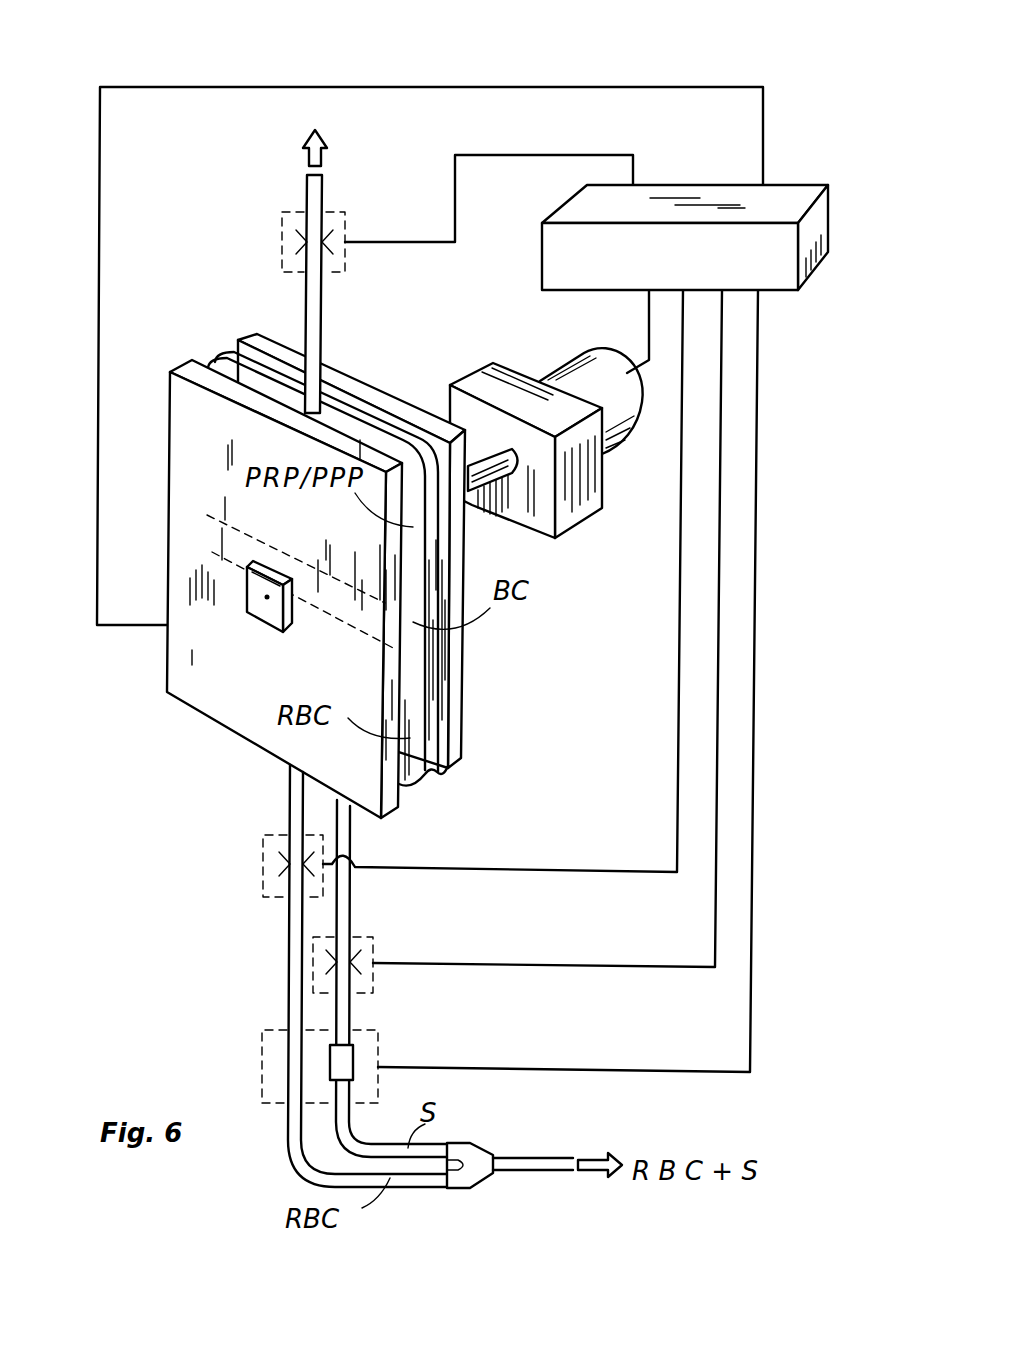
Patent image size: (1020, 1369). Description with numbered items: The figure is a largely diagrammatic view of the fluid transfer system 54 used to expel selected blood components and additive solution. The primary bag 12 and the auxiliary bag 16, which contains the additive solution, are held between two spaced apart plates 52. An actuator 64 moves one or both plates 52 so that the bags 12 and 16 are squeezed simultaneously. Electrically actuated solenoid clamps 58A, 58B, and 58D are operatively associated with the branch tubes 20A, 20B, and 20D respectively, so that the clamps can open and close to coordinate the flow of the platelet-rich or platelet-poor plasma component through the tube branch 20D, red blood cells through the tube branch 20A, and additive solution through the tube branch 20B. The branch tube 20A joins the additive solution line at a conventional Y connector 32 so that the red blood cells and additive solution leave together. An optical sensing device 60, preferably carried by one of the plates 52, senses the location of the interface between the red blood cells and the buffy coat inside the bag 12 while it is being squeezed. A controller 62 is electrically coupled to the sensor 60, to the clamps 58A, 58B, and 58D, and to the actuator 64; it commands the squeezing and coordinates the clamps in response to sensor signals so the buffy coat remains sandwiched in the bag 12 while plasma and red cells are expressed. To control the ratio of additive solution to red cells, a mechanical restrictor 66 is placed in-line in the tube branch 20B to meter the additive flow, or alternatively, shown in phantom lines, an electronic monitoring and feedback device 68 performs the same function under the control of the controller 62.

The primary bag 12 is at (410, 787).
The auxiliary bag 16 is at (438, 668).
The branch tube 20A is at (292, 793).
The branch tube 20B is at (348, 917).
The branch tube 20D is at (318, 308).
The Y connector 32 is at (482, 1168).
The plates 52 is at (326, 579).
The fluid transfer system 54 is at (146, 78).
The solenoid clamp 58A is at (277, 890).
The solenoid clamp 58B is at (382, 995).
The solenoid clamp 58D is at (378, 190).
The optical sensing device 60 is at (277, 612).
The controller 62 is at (830, 203).
The actuator 64 is at (578, 497).
The mechanical restrictor 66 is at (343, 1063).
The electronic monitoring and feedback device 68 is at (262, 1045).